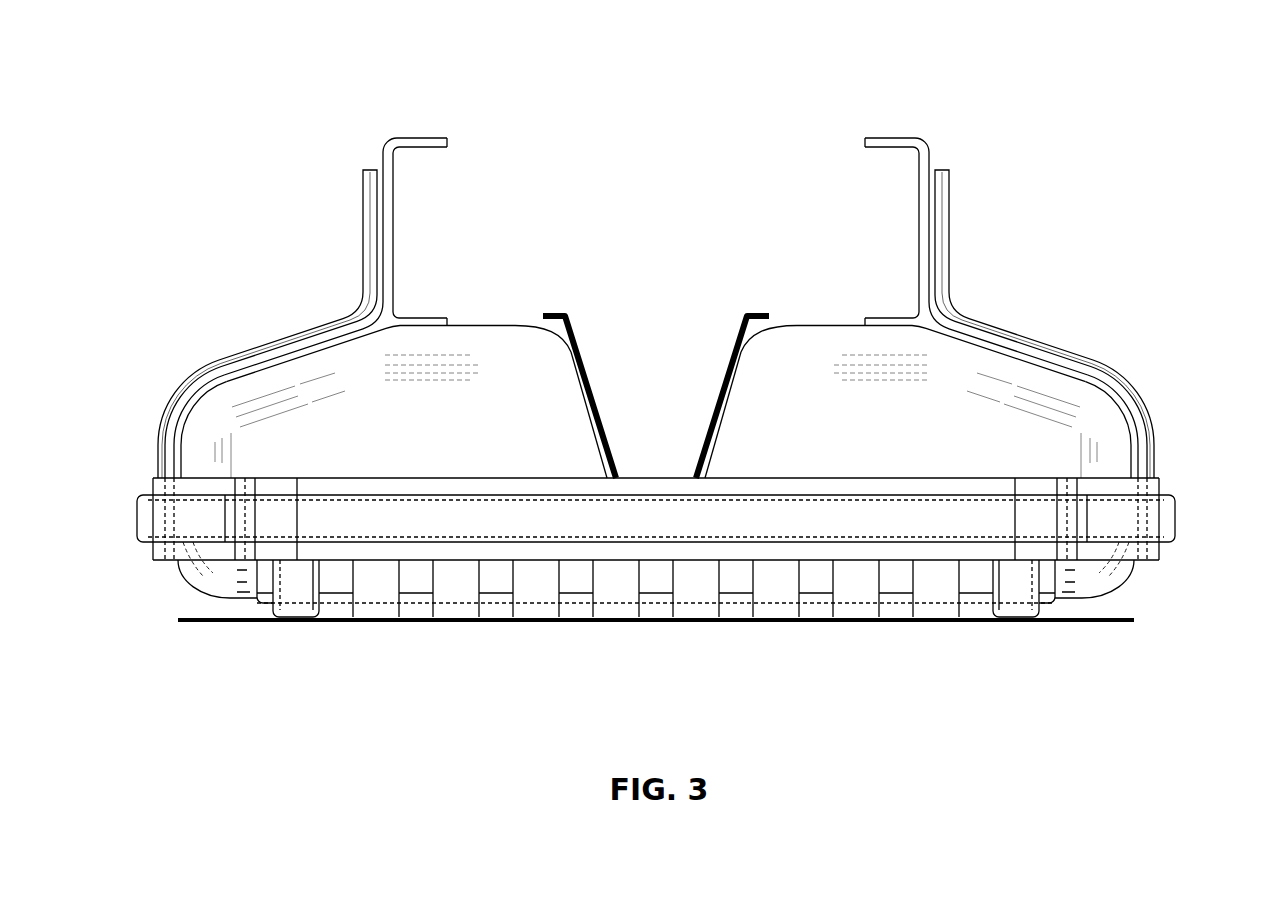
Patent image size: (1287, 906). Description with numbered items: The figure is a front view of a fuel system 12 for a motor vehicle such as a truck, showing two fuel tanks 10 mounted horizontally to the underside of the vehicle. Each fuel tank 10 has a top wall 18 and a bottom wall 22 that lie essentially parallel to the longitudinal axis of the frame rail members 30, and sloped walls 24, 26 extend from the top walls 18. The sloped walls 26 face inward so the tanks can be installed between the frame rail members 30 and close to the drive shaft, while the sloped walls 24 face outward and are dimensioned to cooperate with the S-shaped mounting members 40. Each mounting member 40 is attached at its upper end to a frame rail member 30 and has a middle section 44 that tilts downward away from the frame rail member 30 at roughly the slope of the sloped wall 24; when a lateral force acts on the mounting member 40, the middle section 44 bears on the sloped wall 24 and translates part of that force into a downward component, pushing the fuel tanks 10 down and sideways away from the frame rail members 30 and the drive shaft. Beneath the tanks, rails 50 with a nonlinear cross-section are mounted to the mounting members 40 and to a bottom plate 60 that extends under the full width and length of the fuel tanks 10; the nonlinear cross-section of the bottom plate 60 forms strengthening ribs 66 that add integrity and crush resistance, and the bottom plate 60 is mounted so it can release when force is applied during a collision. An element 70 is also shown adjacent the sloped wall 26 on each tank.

The fuel tank 10 is at (215, 393).
The fuel system 12 is at (669, 382).
The top wall 18 is at (481, 323).
The bottom wall 22 is at (232, 604).
The sloped wall 24 is at (306, 350).
The sloped wall 26 is at (588, 409).
The frame rail member 30 is at (430, 137).
The mounting member 40 is at (152, 428).
The middle section 44 is at (253, 347).
The rail 50 is at (1183, 500).
The bottom plate 60 is at (1102, 632).
The strengthening ribs 66 is at (307, 612).
The flap 70 is at (590, 346).